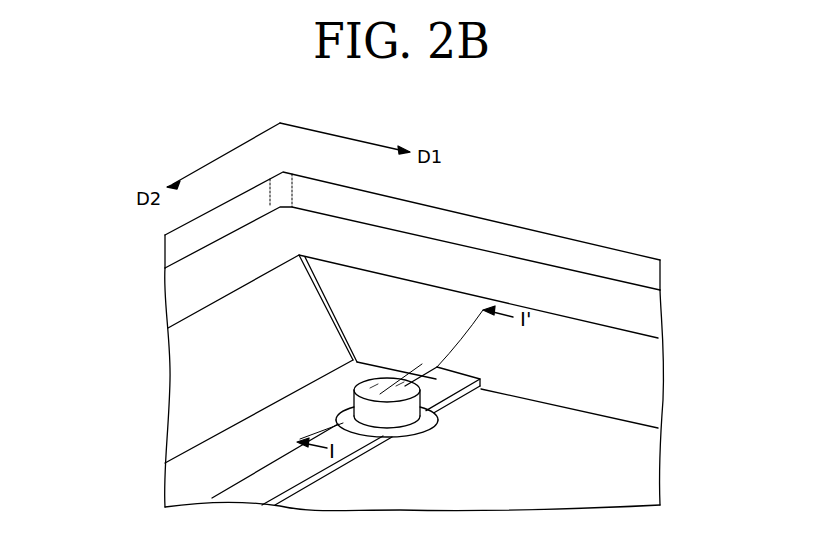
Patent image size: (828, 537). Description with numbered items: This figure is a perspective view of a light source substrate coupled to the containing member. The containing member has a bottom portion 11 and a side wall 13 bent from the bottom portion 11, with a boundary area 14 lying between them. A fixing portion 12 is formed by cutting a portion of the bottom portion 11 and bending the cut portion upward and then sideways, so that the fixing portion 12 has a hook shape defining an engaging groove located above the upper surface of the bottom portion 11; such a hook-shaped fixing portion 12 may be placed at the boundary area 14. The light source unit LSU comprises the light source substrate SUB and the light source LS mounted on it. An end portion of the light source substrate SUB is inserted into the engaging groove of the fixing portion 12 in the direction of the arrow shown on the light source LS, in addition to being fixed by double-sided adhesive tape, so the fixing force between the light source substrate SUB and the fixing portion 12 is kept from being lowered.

The bottom portion 11 is at (647, 476).
The fixing portion 12 is at (457, 380).
The side wall 13 is at (647, 377).
The boundary area 14 is at (636, 421).
The light source LS is at (355, 384).
The light source substrate SUB is at (270, 480).
The light source unit LSU is at (80, 368).